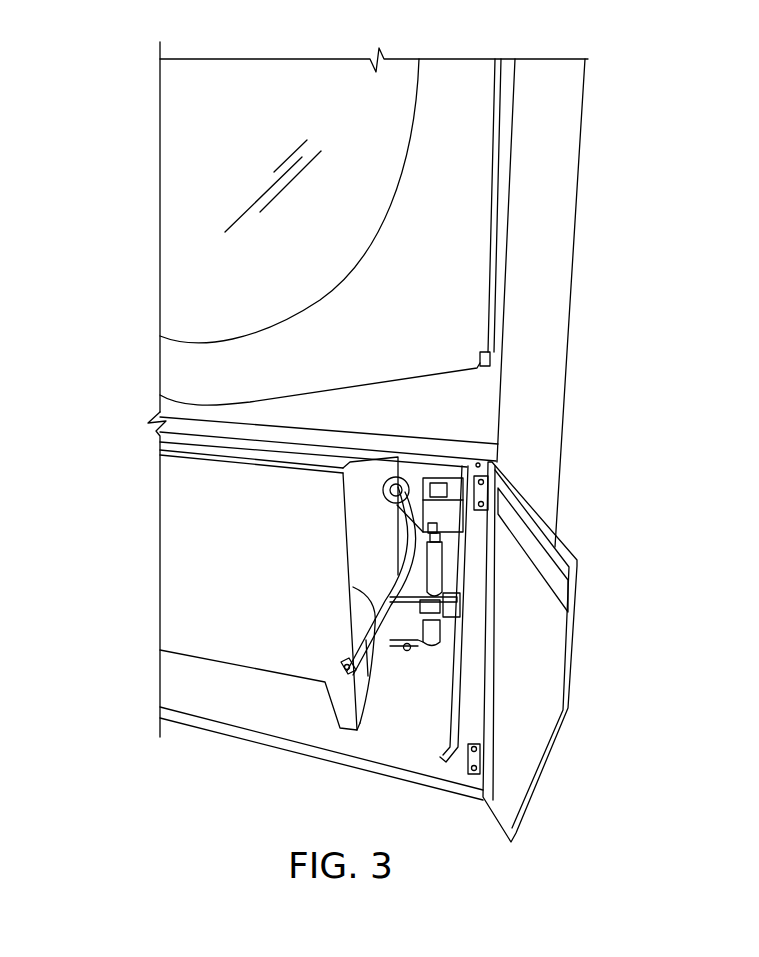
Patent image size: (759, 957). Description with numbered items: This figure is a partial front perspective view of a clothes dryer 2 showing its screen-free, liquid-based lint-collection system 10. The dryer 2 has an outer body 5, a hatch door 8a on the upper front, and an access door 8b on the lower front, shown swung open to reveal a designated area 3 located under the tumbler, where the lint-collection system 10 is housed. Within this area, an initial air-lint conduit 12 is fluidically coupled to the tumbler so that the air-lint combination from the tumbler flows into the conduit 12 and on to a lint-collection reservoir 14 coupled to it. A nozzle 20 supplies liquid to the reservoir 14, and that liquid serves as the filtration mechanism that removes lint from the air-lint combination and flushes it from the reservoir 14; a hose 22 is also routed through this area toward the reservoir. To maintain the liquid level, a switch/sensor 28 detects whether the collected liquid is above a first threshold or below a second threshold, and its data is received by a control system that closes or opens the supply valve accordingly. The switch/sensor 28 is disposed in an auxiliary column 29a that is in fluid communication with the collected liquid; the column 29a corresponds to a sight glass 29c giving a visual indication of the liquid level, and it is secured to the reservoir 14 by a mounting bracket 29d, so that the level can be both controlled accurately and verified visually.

The clothes dryer 2 is at (612, 187).
The designated area 3 is at (410, 741).
The outer body 5 is at (570, 135).
The hatch door 8a is at (190, 297).
The access door 8b is at (574, 622).
The lint-collection system 10 is at (150, 638).
The initial air-lint conduit 12 is at (381, 520).
The lint-collection reservoir 14 is at (373, 643).
The nozzle 20 is at (344, 671).
The hose 22 is at (354, 592).
The switch/sensor 28 is at (449, 547).
The auxiliary column 29a is at (456, 567).
The sight glass 29c is at (445, 630).
The mounting bracket 29d is at (455, 592).